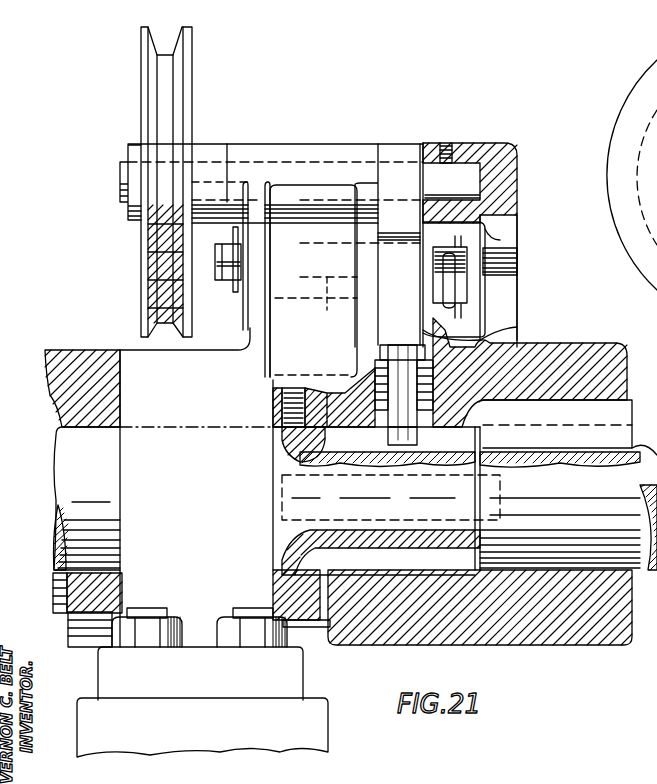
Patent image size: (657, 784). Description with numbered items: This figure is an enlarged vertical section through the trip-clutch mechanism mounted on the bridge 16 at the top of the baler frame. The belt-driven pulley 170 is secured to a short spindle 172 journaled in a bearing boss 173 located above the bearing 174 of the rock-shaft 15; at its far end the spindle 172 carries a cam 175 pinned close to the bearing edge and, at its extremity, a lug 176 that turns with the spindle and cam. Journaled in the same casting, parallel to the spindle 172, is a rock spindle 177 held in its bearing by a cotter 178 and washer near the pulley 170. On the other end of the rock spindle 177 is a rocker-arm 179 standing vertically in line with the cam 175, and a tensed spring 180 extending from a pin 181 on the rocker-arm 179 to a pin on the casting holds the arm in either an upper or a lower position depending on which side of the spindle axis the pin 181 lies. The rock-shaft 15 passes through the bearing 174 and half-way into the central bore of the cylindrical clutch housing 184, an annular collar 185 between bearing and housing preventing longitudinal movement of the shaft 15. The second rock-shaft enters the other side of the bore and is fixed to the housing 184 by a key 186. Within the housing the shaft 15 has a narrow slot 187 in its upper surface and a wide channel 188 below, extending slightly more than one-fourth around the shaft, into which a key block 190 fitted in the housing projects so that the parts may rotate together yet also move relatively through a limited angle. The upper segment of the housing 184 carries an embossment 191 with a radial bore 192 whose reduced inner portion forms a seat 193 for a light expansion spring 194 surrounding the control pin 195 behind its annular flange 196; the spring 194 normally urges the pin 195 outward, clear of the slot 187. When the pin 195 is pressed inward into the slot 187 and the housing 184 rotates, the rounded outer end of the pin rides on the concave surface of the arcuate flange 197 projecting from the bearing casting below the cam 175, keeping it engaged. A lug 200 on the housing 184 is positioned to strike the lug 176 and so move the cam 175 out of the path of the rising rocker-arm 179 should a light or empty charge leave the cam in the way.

The rock-shaft 15 is at (63, 463).
The bridge 16 is at (312, 723).
The pulley 170 is at (147, 106).
The spindle 172 is at (126, 180).
The bearing boss 173 is at (316, 152).
The bearing 174 is at (133, 353).
The cam 175 is at (392, 208).
The lug 176 is at (507, 248).
The rock spindle 177 is at (323, 306).
The cotter 178 is at (242, 282).
The rocker-arm 179 is at (418, 308).
The spring 180 is at (483, 255).
The pin 181 is at (463, 283).
The clutch housing 184 is at (481, 633).
The annular collar 185 is at (294, 624).
The key 186 is at (598, 410).
The slot 187 is at (323, 433).
The channel 188 is at (421, 556).
The key block 190 is at (502, 493).
The embossment 191 is at (443, 333).
The radial bore 192 is at (378, 390).
The seat 193 is at (382, 418).
The expansion spring 194 is at (380, 378).
The control pin 195 is at (392, 370).
The annular flange 196 is at (388, 348).
The arcuate flange 197 is at (293, 358).
The lug 200 is at (517, 280).